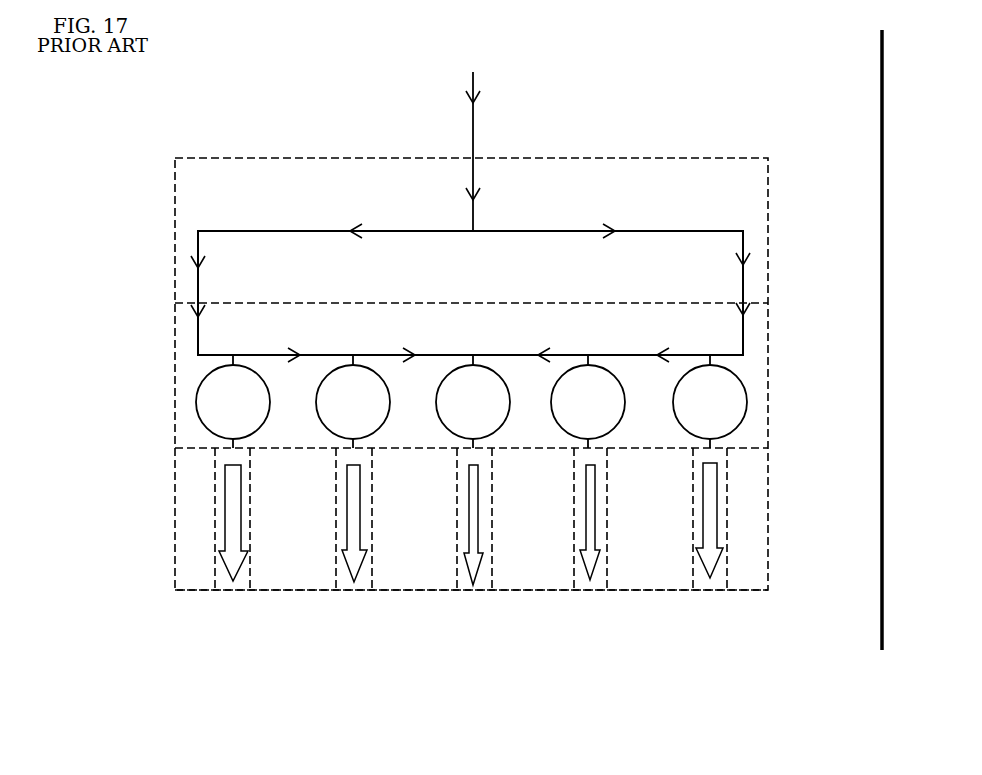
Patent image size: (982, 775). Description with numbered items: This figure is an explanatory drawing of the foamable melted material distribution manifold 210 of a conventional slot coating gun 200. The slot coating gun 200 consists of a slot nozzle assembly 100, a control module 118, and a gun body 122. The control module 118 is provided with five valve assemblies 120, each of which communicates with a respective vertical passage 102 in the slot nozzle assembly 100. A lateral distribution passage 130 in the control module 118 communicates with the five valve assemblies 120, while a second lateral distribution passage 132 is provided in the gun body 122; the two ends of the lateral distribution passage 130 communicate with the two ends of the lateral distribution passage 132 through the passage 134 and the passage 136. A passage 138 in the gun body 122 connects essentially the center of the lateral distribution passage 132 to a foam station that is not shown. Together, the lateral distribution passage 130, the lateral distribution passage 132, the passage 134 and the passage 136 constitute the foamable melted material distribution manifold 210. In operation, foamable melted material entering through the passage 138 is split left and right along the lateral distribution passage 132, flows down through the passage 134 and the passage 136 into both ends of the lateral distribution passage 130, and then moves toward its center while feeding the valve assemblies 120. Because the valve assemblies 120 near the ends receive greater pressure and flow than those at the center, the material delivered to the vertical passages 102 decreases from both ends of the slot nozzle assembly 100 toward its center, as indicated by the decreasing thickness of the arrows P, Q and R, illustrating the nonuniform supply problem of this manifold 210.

The slot coating gun 200 is at (770, 152).
The foamable melted material distribution manifold 210 is at (662, 215).
The passage 138 is at (475, 174).
The lateral distribution passage 132 is at (541, 231).
The gun body 122 is at (768, 222).
The passage 136 is at (197, 329).
The passage 134 is at (743, 323).
The lateral distribution passage 130 is at (633, 354).
The valve assembly 120 is at (257, 391).
The control module 118 is at (768, 393).
The slot nozzle assembly 100 is at (768, 518).
The vertical passage 102 is at (256, 582).
The arrow P is at (241, 517).
The arrow Q is at (360, 517).
The arrow R is at (478, 517).